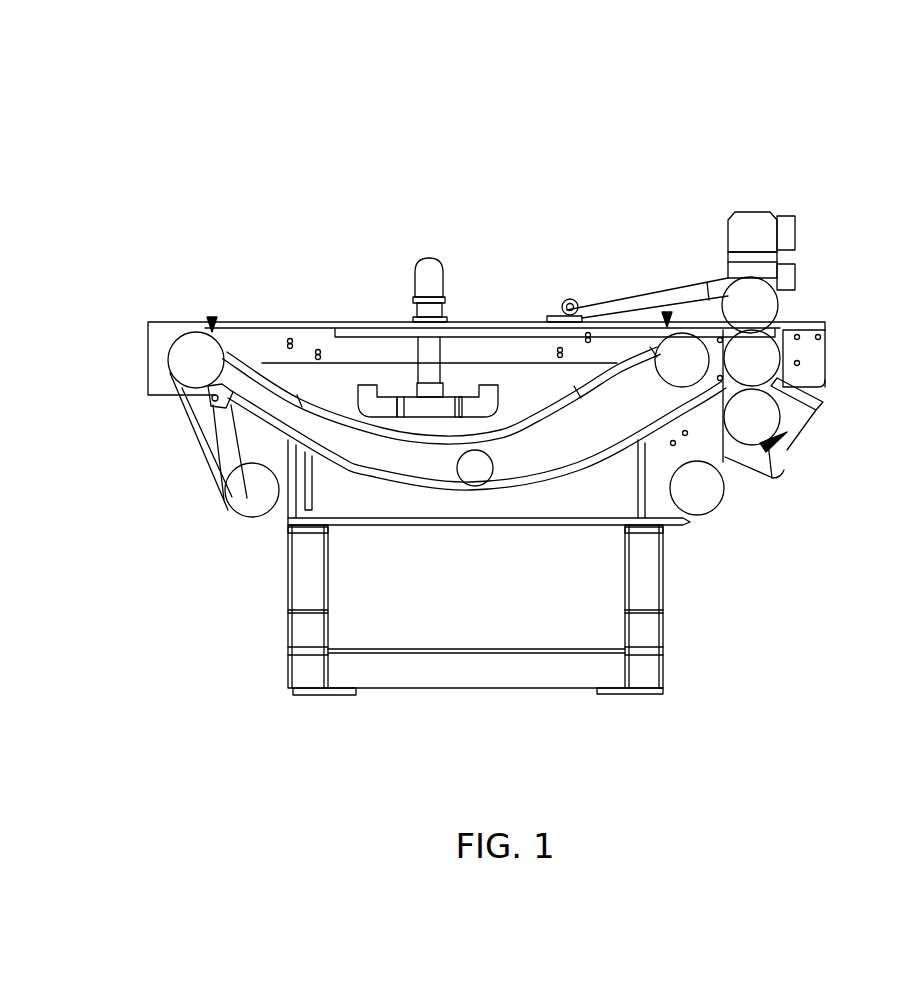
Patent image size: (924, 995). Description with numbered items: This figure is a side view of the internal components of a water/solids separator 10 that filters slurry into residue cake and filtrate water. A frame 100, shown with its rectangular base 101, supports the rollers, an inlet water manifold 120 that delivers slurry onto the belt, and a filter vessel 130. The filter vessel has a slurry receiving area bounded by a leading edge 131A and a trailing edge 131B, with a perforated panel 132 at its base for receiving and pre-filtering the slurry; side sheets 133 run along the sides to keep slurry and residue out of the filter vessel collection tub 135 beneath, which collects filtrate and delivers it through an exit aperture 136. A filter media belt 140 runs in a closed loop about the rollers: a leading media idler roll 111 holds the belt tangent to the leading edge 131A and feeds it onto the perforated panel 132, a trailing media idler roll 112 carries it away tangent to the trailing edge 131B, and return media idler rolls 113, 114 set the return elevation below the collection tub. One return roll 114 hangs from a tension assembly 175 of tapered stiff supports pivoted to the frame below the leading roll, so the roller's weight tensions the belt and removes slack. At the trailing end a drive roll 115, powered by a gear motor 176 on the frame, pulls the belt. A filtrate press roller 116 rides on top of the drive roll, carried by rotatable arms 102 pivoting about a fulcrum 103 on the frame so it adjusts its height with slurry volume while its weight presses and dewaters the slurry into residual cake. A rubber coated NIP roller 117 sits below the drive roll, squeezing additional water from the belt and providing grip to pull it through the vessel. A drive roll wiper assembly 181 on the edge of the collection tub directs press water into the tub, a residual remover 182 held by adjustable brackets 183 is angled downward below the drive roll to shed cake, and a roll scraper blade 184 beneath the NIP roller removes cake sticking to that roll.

The water/solids separator 10 is at (752, 118).
The frame 100 is at (165, 332).
The rectangular base 101 is at (650, 580).
The rotatable arms 102 is at (652, 291).
The fulcrum 103 is at (569, 299).
The leading media idler roll 111 is at (176, 362).
The trailing media idler roll 112 is at (685, 372).
The return media idler roll 113 is at (700, 512).
The return media idler roll 114 is at (246, 508).
The drive roll 115 is at (770, 358).
The filtrate press roller 116 is at (763, 307).
The NIP roller 117 is at (770, 415).
The inlet water manifold 120 is at (430, 270).
The filter vessel 130 is at (340, 380).
The leading edge 131A is at (211, 317).
The trailing edge 131B is at (666, 312).
The perforated panel 132 is at (383, 426).
The side sheets 133 is at (393, 344).
The filter vessel collection tub 135 is at (370, 485).
The exit aperture 136 is at (476, 467).
The filter media belt 140 is at (190, 430).
The tension assembly 175 is at (228, 462).
The gear motor 176 is at (792, 228).
The drive roll wiper assembly 181 is at (722, 412).
The residual remover 182 is at (816, 396).
The brackets 183 is at (800, 380).
The roll scraper blade 184 is at (775, 474).